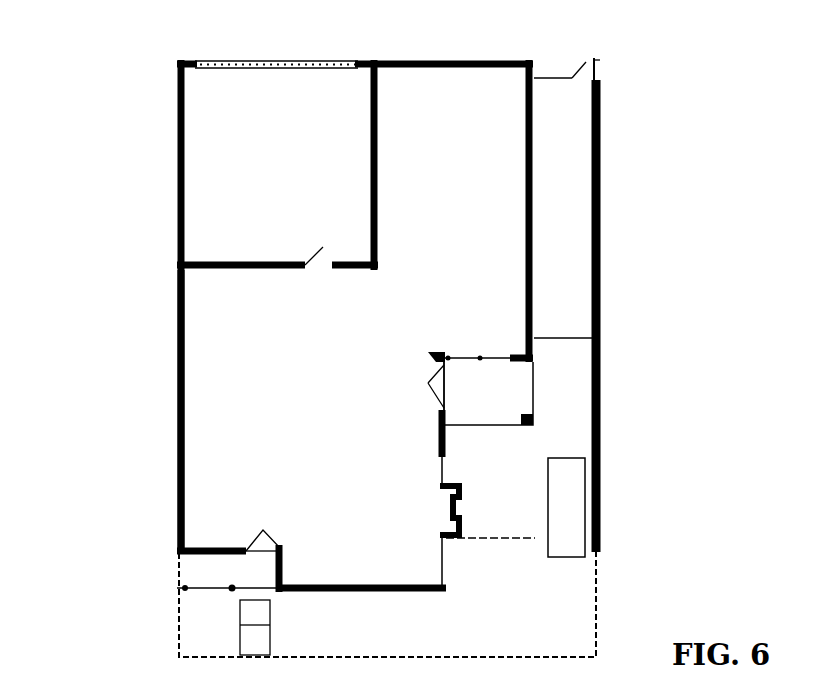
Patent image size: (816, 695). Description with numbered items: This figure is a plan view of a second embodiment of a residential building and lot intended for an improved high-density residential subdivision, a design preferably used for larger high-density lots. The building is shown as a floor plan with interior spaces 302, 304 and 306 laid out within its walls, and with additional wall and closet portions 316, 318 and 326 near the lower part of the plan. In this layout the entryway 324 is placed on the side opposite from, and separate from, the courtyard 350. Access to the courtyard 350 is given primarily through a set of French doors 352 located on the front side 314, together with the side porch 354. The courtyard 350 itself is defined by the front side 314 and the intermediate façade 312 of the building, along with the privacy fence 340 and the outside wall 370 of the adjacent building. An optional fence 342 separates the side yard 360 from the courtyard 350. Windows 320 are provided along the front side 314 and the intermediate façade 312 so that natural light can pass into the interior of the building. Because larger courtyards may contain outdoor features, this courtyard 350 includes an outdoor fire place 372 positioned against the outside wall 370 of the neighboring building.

The first room 302 is at (358, 287).
The main room 304 is at (268, 443).
The second room 306 is at (455, 211).
The intermediate façade 312 is at (520, 354).
The front side 314 is at (437, 433).
The bottom wall 316 is at (388, 590).
The window 318 is at (350, 57).
The windows 320 is at (470, 356).
The entryway 324 is at (253, 530).
The closet 326 is at (202, 568).
The privacy fence 340 is at (567, 646).
The optional fence 342 is at (567, 332).
The courtyard 350 is at (512, 530).
The French doors 352 is at (428, 380).
The side porch 354 is at (488, 393).
The side yard 360 is at (557, 138).
The outside wall 370 is at (606, 396).
The outdoor fire place 372 is at (566, 494).